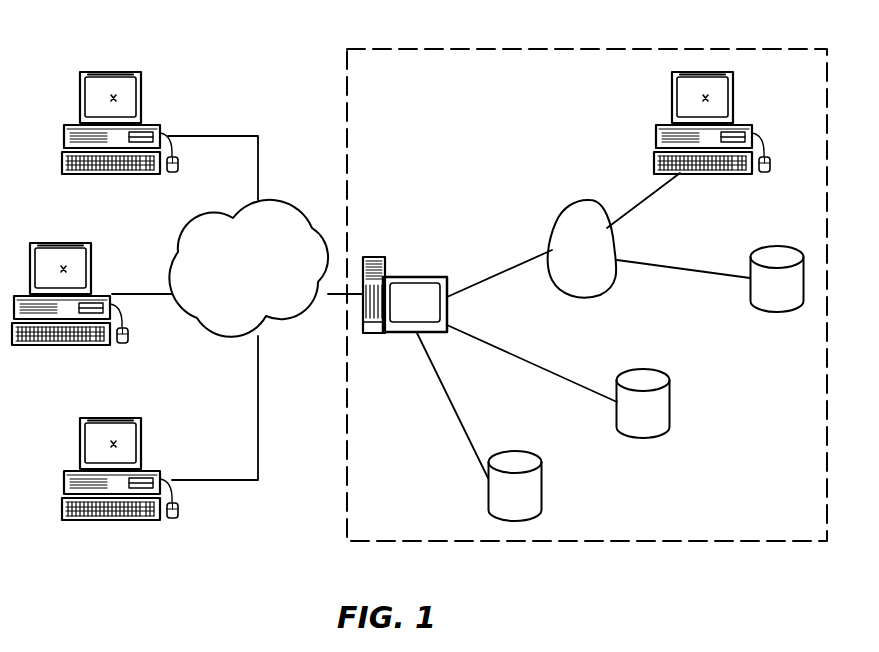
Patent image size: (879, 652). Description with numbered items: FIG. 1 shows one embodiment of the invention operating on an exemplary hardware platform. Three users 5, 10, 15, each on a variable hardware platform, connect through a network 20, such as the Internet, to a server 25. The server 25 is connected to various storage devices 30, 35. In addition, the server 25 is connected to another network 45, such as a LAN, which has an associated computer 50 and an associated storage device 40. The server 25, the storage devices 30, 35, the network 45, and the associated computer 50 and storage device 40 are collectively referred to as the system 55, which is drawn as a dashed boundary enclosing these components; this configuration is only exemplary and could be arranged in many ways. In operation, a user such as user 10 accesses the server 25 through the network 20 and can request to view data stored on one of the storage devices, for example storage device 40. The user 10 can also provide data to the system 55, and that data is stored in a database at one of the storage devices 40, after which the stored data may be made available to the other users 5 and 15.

The user 5 is at (141, 91).
The user 10 is at (91, 262).
The user 15 is at (141, 435).
The network 20 is at (262, 278).
The server 25 is at (410, 277).
The storage device 30 is at (542, 488).
The storage device 35 is at (650, 437).
The storage device 40 is at (760, 312).
The network 45 is at (598, 260).
The computer 50 is at (672, 82).
The system 55 is at (470, 49).